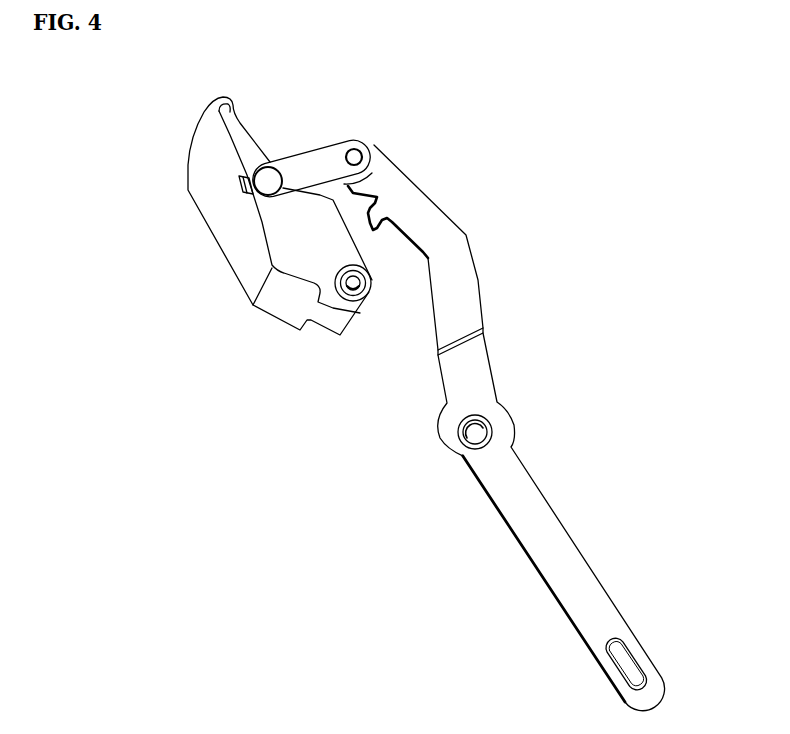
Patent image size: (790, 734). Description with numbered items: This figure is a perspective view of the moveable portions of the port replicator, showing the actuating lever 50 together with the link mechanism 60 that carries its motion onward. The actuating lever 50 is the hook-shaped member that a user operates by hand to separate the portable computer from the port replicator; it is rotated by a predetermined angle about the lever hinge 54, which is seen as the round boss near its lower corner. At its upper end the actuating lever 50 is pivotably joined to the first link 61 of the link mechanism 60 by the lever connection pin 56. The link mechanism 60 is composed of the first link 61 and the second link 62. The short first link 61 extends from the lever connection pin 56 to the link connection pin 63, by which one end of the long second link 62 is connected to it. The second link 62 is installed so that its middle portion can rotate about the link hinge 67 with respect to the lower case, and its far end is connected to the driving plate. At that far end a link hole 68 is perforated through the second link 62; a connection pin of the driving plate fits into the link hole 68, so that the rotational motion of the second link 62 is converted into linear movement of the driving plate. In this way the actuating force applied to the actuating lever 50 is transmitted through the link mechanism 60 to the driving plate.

The actuating lever 50 is at (223, 222).
The lever hinge 54 is at (351, 290).
The lever connection pin 56 is at (263, 182).
The link mechanism 60 is at (497, 113).
The first link 61 is at (373, 139).
The second link 62 is at (442, 207).
The link connection pin 63 is at (354, 155).
The link hinge 67 is at (472, 438).
The link hole 68 is at (626, 665).